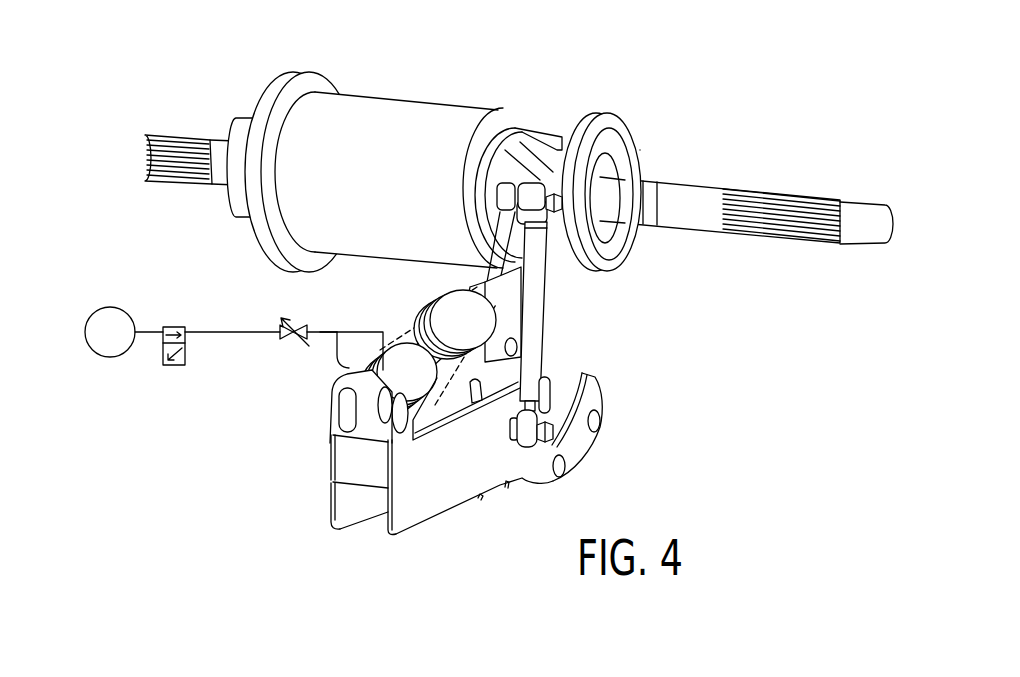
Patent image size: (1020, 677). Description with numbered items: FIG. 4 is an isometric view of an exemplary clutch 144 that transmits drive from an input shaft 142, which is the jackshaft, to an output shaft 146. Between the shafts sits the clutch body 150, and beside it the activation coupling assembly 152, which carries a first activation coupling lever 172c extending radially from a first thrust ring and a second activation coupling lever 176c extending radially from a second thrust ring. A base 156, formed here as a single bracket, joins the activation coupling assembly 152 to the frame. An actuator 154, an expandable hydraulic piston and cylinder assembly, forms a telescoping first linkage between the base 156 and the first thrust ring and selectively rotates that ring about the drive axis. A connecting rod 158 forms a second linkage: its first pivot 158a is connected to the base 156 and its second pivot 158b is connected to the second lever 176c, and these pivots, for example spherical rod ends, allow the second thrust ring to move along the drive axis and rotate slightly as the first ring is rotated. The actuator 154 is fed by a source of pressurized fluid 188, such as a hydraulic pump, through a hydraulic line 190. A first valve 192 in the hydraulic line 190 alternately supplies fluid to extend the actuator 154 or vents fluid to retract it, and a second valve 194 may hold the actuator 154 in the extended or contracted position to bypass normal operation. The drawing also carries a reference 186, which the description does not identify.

The input shaft 142 is at (173, 147).
The clutch 144 is at (673, 334).
The output shaft 146 is at (802, 207).
The clutch body 150 is at (403, 122).
The activation coupling assembly 152 is at (557, 140).
The actuator 154 is at (402, 332).
The base 156 is at (443, 495).
The connecting rod 158 is at (538, 317).
The first pivot 158a is at (553, 433).
The second pivot 158b is at (563, 204).
The first activation coupling lever 172c is at (492, 234).
The second activation coupling lever 176c is at (540, 177).
The pneumatic actuator 186 is at (300, 418).
The source of pressurized fluid 188 is at (112, 307).
The hydraulic line 190 is at (337, 336).
The first valve 192 is at (177, 325).
The second valve 194 is at (280, 328).